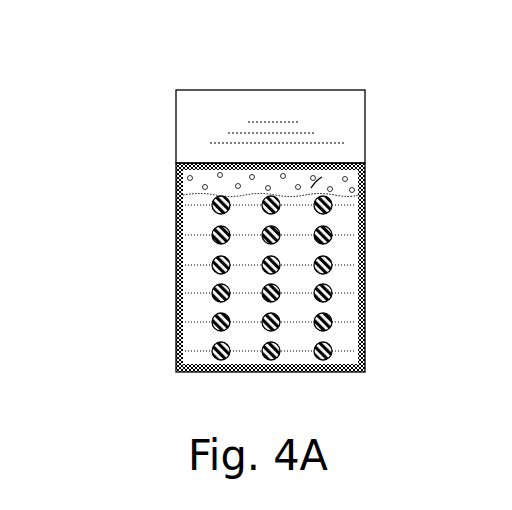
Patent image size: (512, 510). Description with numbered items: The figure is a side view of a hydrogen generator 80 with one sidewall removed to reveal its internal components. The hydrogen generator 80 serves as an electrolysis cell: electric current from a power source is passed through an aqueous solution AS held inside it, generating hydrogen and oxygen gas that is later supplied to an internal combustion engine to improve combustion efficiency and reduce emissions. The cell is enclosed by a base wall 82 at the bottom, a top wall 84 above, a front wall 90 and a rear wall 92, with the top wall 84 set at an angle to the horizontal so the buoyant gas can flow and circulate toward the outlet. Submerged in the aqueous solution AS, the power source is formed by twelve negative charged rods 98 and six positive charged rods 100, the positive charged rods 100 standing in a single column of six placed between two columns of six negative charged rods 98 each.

The hydrogen generator 80 is at (271, 228).
The base wall 82 is at (325, 372).
The top wall 84 is at (207, 124).
The front wall 90 is at (262, 279).
The rear wall 92 is at (178, 253).
The negative charged rods 98 is at (213, 352).
The positive charged rods 100 is at (263, 318).
The aqueous solution AS is at (190, 218).